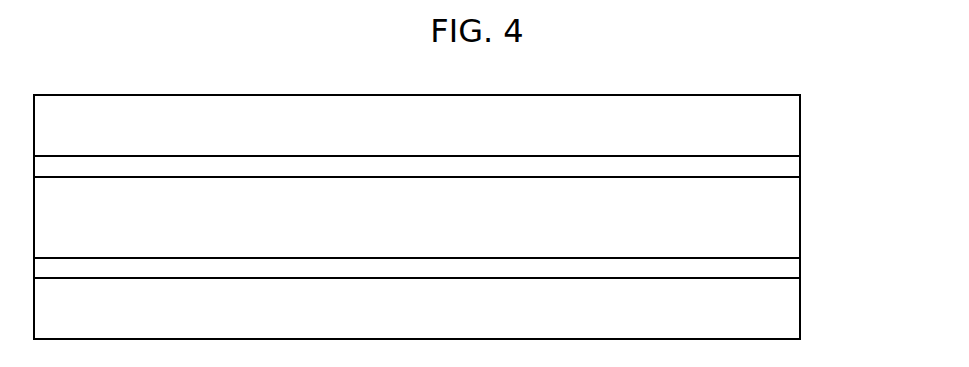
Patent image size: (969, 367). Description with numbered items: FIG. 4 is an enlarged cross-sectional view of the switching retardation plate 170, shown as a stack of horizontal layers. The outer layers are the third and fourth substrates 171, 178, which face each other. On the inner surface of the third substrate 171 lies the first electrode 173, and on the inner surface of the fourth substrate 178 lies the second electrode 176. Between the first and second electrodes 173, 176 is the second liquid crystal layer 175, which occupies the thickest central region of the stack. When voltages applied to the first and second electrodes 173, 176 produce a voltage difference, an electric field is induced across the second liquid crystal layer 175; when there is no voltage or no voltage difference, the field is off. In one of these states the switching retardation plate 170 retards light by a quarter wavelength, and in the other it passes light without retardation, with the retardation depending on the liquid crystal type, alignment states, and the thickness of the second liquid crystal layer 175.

The switching retardation plate 170 is at (877, 132).
The third substrate 171 is at (788, 313).
The first electrode 173 is at (788, 268).
The second liquid crystal layer 175 is at (783, 222).
The second electrode 176 is at (789, 167).
The fourth substrate 178 is at (789, 126).